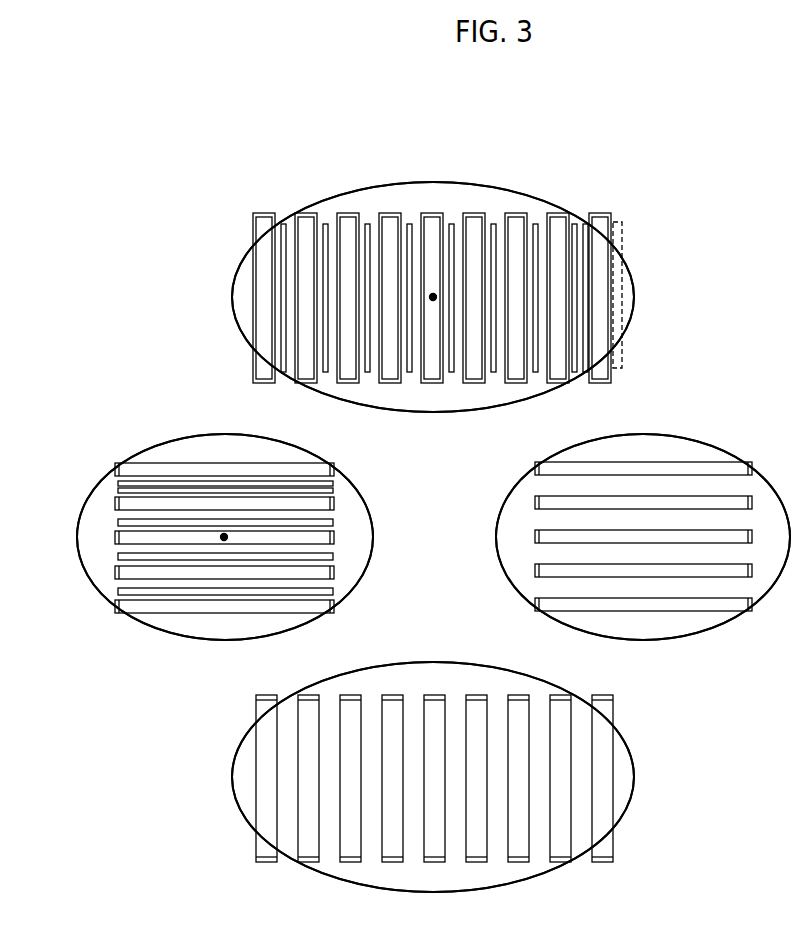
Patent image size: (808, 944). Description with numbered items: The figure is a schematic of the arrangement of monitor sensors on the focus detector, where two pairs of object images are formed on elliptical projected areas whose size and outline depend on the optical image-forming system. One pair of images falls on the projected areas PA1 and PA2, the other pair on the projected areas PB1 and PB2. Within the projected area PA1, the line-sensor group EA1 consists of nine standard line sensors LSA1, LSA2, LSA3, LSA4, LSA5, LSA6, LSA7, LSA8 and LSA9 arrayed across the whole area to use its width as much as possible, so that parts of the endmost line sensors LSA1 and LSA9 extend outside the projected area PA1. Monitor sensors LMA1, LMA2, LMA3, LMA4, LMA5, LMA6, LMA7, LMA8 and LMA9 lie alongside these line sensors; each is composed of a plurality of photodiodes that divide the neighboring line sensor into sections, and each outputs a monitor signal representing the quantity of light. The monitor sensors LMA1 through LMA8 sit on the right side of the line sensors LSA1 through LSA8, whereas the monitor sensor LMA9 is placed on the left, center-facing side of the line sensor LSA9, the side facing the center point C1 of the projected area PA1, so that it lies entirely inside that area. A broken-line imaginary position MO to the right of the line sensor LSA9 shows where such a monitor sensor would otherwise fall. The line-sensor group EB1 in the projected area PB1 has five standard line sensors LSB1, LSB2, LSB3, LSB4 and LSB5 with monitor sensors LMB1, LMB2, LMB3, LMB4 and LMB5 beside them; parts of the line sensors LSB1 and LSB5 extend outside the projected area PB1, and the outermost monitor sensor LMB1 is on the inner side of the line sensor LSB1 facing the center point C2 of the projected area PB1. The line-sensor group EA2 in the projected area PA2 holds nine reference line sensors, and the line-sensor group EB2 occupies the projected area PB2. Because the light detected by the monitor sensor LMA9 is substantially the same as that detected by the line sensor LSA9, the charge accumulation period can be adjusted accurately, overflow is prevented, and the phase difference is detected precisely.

The line-sensor group EA1 is at (228, 243).
The projected area PA1 is at (233, 276).
The center point C1 is at (433, 297).
The auxiliary (dummy) line pattern MO is at (624, 231).
The line sensor LSA1 is at (253, 367).
The line sensor LSA2 is at (306, 386).
The line sensor LSA3 is at (355, 386).
The line sensor LSA4 is at (398, 386).
The line sensor LSA5 is at (433, 386).
The line sensor LSA6 is at (473, 386).
The line sensor LSA7 is at (515, 386).
The line sensor LSA8 is at (556, 386).
The line sensor LSA9 is at (603, 387).
The monitor sensor LMA1 is at (284, 226).
The monitor sensor LMA2 is at (325, 226).
The monitor sensor LMA3 is at (367, 226).
The monitor sensor LMA4 is at (409, 226).
The monitor sensor LMA5 is at (451, 226).
The monitor sensor LMA6 is at (493, 226).
The monitor sensor LMA7 is at (535, 226).
The monitor sensor LMA8 is at (574, 226).
The monitor sensor LMA9 is at (586, 226).
The line-sensor group EB1 is at (195, 652).
The projected area PB1 is at (237, 641).
The center point C2 is at (224, 537).
The line sensor LSB1 is at (182, 462).
The line sensor LSB2 is at (335, 501).
The line sensor LSB3 is at (335, 535).
The line sensor LSB4 is at (335, 570).
The line sensor LSB5 is at (294, 614).
The monitor sensor LMB1 is at (118, 485).
The monitor sensor LMB2 is at (118, 490).
The monitor sensor LMB3 is at (118, 522).
The monitor sensor LMB4 is at (118, 556).
The monitor sensor LMB5 is at (118, 591).
The third electrode area EB2 is at (700, 642).
The projected area PB2 is at (640, 641).
The line-sensor group EA2 is at (224, 796).
The projected area PA2 is at (236, 763).